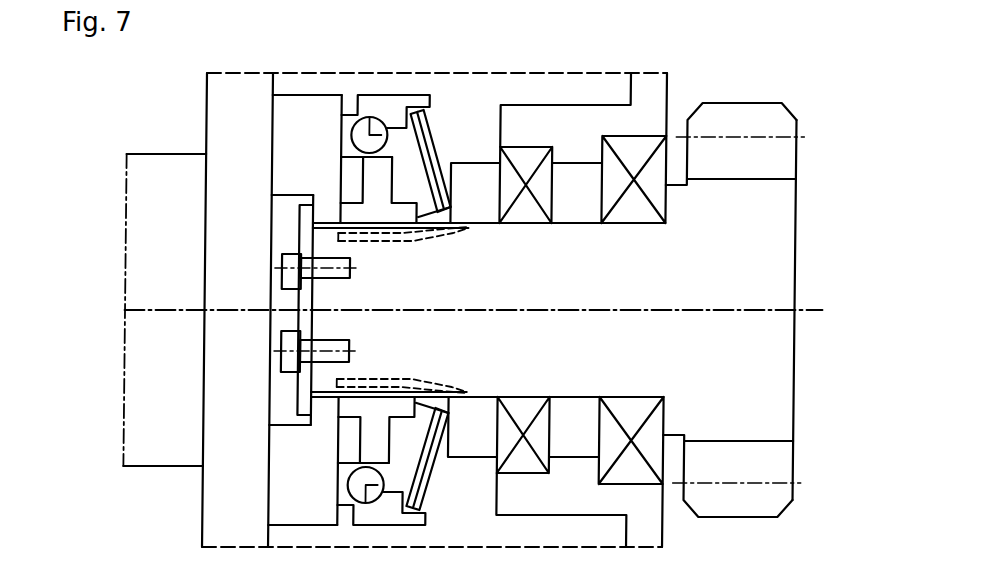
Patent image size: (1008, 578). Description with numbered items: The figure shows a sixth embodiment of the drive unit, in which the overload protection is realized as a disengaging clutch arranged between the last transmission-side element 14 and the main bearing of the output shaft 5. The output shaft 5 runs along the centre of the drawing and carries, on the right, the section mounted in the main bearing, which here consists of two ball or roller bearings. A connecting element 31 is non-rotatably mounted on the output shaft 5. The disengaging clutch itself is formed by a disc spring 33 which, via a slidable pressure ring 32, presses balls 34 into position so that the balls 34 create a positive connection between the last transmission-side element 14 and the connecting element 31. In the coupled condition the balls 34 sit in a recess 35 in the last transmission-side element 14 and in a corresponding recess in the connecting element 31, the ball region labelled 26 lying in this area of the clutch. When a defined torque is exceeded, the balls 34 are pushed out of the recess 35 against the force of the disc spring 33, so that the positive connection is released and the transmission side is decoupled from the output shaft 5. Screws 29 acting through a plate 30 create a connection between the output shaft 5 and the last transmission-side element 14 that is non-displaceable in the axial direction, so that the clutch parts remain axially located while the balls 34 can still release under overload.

The output shaft 5 is at (783, 292).
The last transmission-side element 14 is at (290, 107).
The rolling element 26 is at (388, 152).
The screws 29 is at (303, 262).
The plate 30 is at (305, 322).
The connecting element 31 is at (378, 193).
The slidable pressure ring 32 is at (392, 106).
The disc spring 33 is at (436, 127).
The balls 34 is at (371, 118).
The recess 35 is at (352, 134).